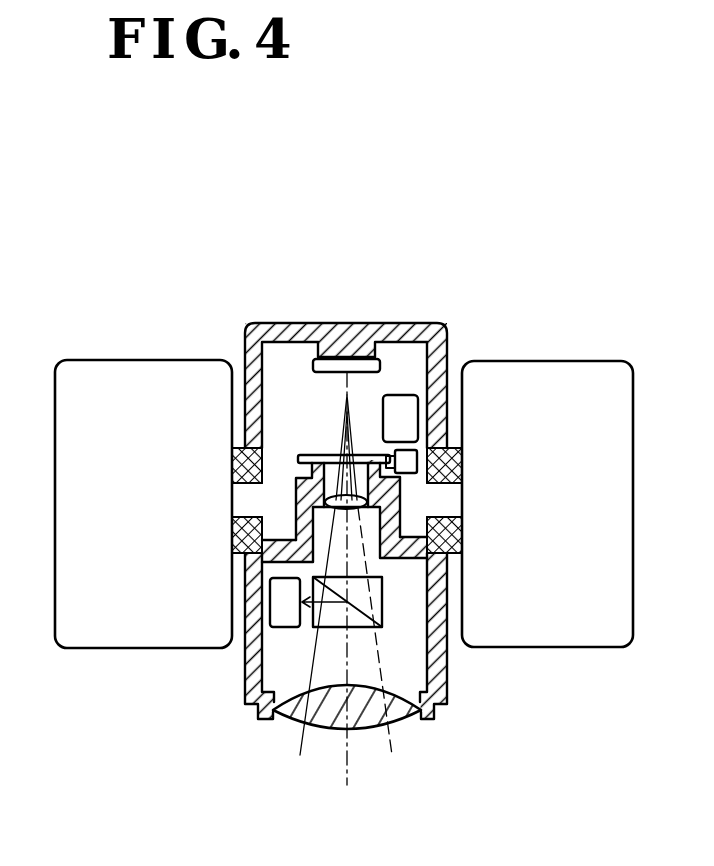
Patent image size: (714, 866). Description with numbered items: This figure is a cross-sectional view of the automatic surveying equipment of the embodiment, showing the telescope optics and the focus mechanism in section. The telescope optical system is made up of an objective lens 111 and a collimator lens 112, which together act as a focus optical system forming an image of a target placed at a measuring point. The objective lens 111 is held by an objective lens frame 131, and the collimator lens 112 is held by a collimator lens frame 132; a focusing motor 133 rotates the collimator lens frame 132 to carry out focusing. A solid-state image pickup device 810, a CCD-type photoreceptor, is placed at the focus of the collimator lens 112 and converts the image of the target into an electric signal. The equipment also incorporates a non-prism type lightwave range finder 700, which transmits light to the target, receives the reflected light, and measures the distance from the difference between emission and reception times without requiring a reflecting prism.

The objective lens frame 131 is at (447, 678).
The collimator lens frame 132 is at (318, 458).
The focusing motor 133 is at (408, 410).
The collimator lens 112 is at (420, 441).
The solid-state image pickup device 810 is at (368, 340).
The non-prism type lightwave range finder 700 is at (290, 598).
The objective lens 111 is at (328, 730).